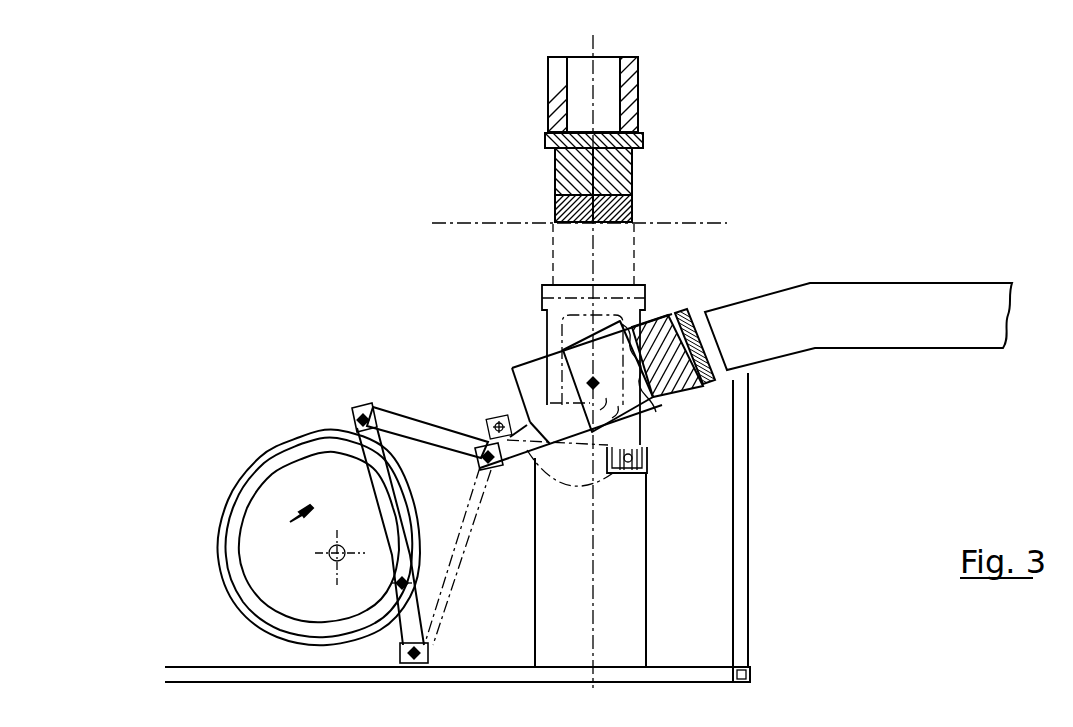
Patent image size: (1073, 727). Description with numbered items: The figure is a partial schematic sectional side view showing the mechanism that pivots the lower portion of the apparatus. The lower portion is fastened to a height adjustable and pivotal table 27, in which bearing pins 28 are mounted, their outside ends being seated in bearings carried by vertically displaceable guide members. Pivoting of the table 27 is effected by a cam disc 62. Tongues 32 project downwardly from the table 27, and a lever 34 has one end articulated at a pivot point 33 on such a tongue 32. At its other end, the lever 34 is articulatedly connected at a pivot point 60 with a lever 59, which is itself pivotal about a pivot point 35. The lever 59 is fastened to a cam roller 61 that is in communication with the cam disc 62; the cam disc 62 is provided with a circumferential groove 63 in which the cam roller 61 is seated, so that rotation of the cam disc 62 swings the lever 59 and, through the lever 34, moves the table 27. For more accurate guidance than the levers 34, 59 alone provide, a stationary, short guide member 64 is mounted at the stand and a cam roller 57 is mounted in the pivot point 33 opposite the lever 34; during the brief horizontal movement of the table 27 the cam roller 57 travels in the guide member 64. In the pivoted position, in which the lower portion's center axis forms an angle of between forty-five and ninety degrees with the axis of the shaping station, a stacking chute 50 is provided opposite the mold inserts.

The table 27 is at (533, 368).
The bearing pin 28 is at (588, 383).
The tongue 32 is at (571, 471).
The pivot point 33 is at (498, 473).
The lever 34 is at (402, 424).
The pivot point 35 is at (418, 663).
The stacking chute 50 is at (805, 330).
The cam roller 57 is at (648, 458).
The lever 59 is at (377, 536).
The pivot point 60 is at (352, 419).
The cam roller 61 is at (412, 585).
The cam disc 62 is at (255, 547).
The circumferential groove 63 is at (237, 582).
The guide member 64 is at (638, 472).